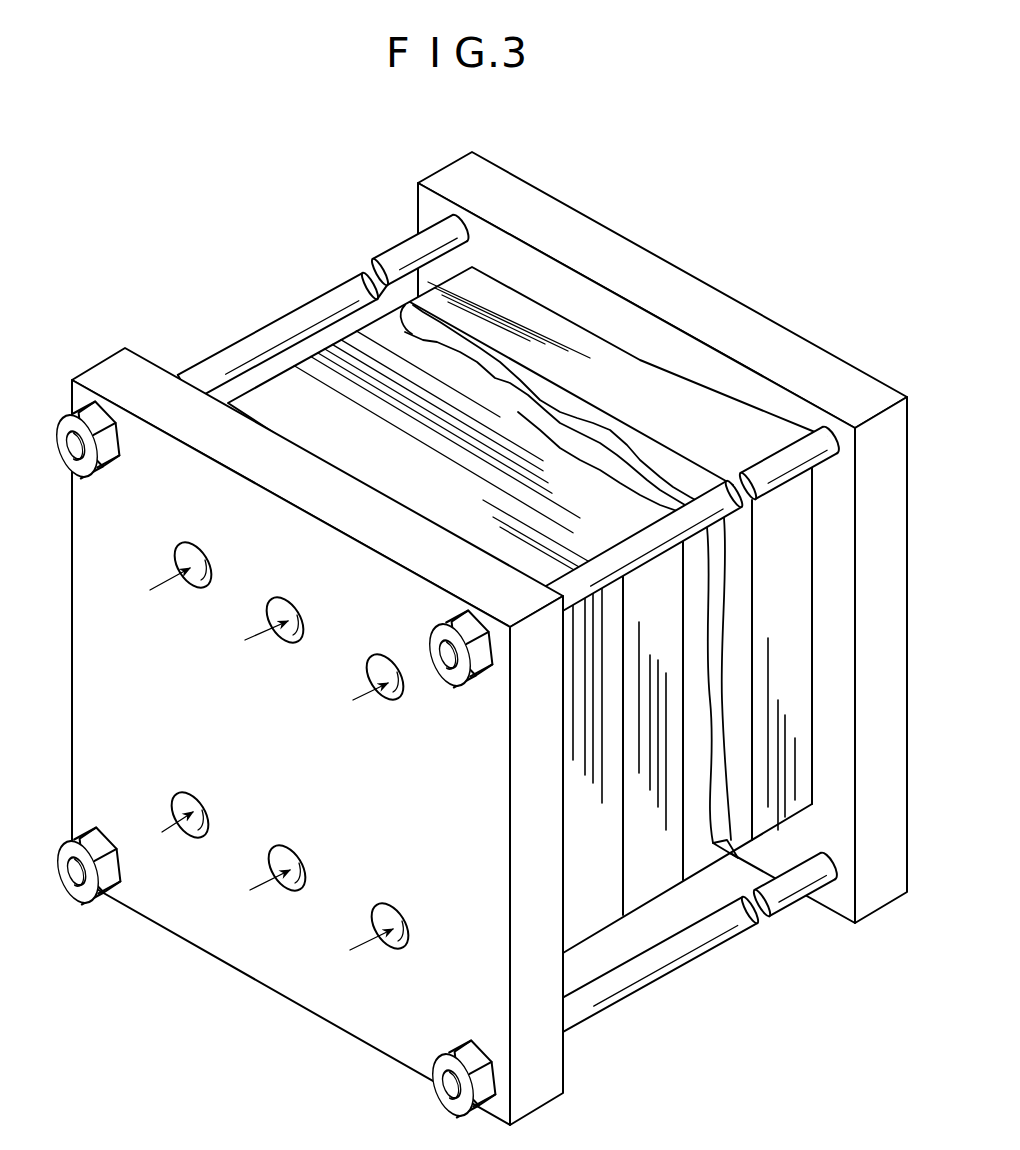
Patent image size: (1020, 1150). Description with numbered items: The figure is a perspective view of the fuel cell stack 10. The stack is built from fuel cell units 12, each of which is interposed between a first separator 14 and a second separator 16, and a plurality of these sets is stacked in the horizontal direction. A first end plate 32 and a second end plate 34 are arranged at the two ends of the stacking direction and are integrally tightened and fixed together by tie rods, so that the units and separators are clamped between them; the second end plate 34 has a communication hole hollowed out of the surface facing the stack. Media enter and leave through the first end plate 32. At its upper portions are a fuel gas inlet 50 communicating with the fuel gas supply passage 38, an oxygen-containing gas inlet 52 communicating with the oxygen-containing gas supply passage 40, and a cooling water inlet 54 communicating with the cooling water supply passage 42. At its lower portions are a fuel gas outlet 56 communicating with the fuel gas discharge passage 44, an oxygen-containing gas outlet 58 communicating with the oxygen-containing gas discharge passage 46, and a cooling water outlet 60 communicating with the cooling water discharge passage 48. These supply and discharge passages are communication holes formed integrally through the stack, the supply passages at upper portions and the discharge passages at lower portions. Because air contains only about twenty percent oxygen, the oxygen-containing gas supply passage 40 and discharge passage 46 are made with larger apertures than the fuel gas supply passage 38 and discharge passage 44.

The fuel cell stack 10 is at (712, 148).
The fuel cell unit 12 is at (322, 338).
The first separator 14 is at (302, 361).
The second separator 16 is at (353, 336).
The first end plate 32 is at (140, 383).
The second end plate 34 is at (694, 298).
The fuel gas supply passage 38 is at (385, 677).
The oxygen-containing gas supply passage 40 is at (193, 565).
The cooling water supply passage 42 is at (285, 620).
The fuel gas discharge passage 44 is at (190, 815).
The oxygen-containing gas discharge passage 46 is at (390, 926).
The cooling water discharge passage 48 is at (287, 868).
The fuel gas inlet 50 is at (423, 694).
The oxygen-containing gas inlet 52 is at (211, 542).
The cooling water inlet 54 is at (309, 598).
The fuel gas outlet 56 is at (201, 783).
The oxygen-containing gas outlet 58 is at (417, 898).
The cooling water outlet 60 is at (317, 842).